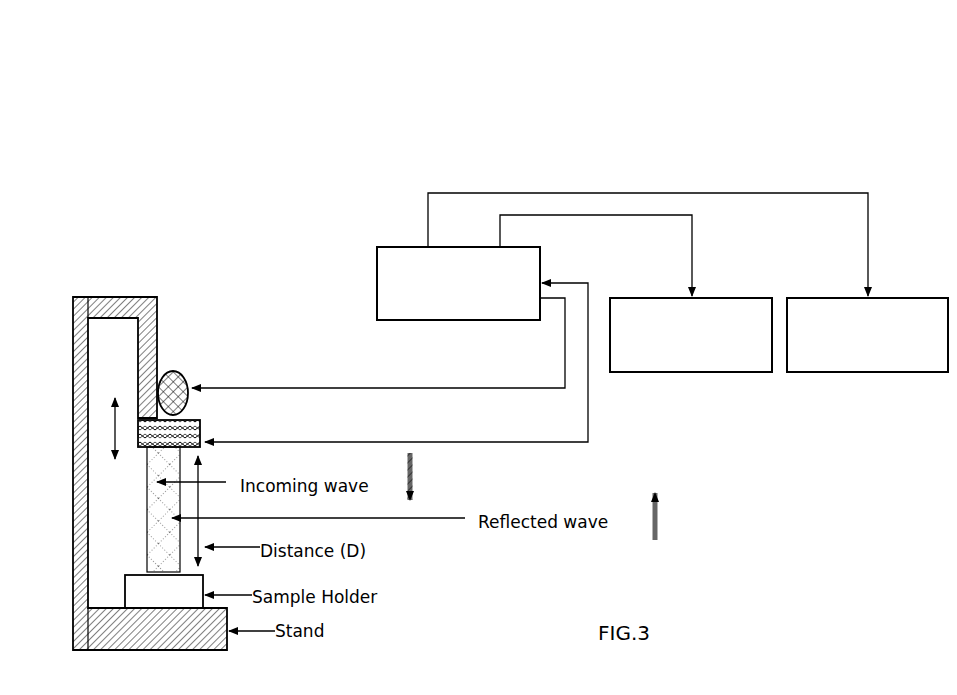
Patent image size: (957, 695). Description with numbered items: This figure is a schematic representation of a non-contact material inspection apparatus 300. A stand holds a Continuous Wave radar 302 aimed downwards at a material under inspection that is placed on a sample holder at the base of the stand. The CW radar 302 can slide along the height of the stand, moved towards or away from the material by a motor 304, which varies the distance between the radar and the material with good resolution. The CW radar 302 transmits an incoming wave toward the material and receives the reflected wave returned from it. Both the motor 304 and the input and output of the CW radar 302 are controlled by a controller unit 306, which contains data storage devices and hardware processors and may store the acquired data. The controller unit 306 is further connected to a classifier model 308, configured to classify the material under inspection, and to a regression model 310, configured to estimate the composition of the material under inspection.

The non-contact material inspection apparatus 300 is at (823, 135).
The Continuous Wave (CW) radar 302 is at (206, 423).
The motor 304 is at (187, 371).
The controller unit 306 is at (390, 344).
The classifier model 308 is at (636, 293).
The regression model 310 is at (688, 282).